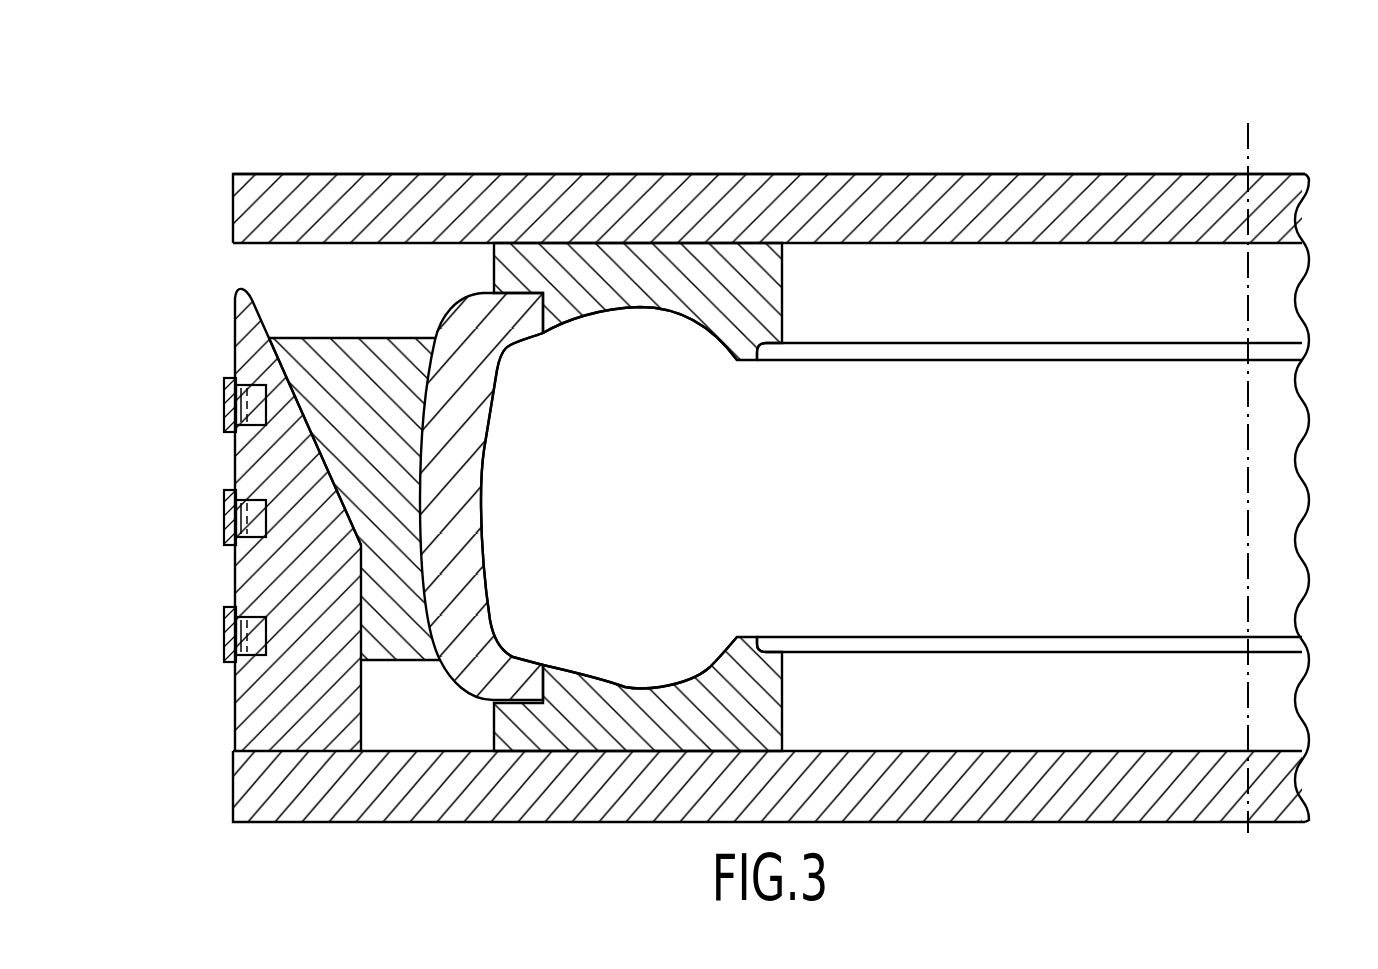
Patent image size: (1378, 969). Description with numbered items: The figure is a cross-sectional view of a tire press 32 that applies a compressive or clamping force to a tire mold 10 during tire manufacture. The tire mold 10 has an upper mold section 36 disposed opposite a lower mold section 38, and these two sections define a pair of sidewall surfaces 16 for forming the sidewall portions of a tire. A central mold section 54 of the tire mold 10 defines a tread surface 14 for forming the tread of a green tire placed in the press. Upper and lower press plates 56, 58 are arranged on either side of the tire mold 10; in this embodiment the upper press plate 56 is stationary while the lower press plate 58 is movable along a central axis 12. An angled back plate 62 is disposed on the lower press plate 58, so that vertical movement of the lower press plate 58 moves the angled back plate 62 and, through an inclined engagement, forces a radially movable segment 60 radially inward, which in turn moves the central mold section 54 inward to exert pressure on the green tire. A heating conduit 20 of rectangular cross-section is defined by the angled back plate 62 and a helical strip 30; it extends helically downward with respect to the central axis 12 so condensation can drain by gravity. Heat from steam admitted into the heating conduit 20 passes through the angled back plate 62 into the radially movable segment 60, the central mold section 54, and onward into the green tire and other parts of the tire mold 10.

The tire mold 10 is at (692, 473).
The central axis 12 is at (1250, 136).
The tread surface 14 is at (492, 509).
The sidewall surfaces 16 is at (596, 324).
The heating conduit 20 is at (253, 398).
The helical strip 30 is at (226, 400).
The tire press 32 is at (543, 150).
The upper mold section 36 is at (695, 278).
The lower mold section 38 is at (615, 730).
The central mold section 54 is at (470, 423).
The upper press plate 56 is at (952, 197).
The lower press plate 58 is at (985, 795).
The radially movable segment 60 is at (321, 348).
The angled back plate 62 is at (265, 468).